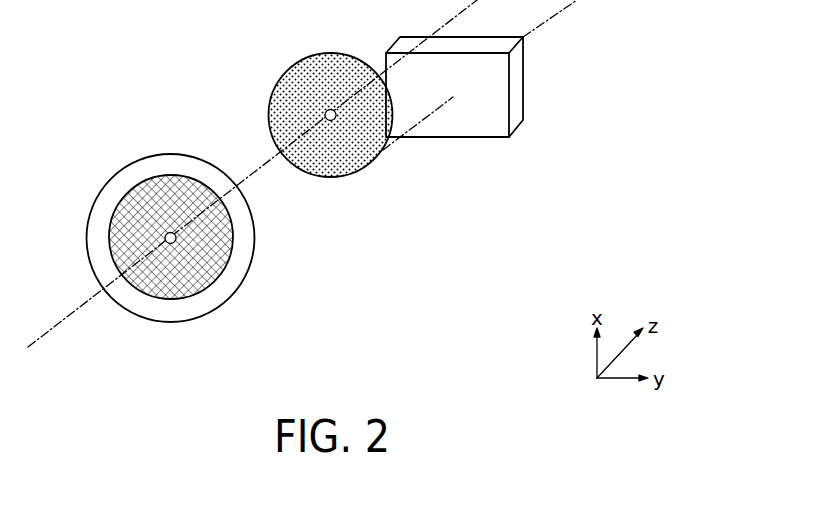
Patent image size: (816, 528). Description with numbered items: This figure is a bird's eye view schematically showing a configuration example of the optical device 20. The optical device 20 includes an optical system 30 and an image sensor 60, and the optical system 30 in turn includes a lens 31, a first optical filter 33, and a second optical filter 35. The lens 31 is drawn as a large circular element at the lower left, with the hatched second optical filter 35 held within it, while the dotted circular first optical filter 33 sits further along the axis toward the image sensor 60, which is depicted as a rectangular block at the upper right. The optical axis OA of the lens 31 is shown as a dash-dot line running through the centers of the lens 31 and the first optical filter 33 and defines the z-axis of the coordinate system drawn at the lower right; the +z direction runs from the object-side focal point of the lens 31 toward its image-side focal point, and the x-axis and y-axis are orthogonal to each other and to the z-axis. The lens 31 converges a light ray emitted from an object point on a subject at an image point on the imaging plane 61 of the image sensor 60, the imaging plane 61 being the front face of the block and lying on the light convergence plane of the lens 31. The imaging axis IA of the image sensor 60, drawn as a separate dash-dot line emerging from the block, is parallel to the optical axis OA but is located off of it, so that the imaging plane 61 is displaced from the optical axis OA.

The optical device 20 is at (234, 179).
The optical system 30 is at (490, 182).
The lens 31 is at (235, 292).
The first optical filter 33 is at (350, 177).
The second optical filter 35 is at (233, 247).
The image sensor 60 is at (490, 119).
The imaging plane 61 is at (488, 127).
The optical axis OA is at (47, 330).
The imaging axis IA is at (563, 14).